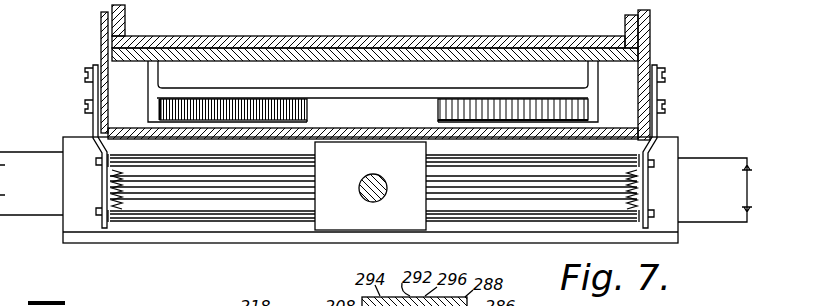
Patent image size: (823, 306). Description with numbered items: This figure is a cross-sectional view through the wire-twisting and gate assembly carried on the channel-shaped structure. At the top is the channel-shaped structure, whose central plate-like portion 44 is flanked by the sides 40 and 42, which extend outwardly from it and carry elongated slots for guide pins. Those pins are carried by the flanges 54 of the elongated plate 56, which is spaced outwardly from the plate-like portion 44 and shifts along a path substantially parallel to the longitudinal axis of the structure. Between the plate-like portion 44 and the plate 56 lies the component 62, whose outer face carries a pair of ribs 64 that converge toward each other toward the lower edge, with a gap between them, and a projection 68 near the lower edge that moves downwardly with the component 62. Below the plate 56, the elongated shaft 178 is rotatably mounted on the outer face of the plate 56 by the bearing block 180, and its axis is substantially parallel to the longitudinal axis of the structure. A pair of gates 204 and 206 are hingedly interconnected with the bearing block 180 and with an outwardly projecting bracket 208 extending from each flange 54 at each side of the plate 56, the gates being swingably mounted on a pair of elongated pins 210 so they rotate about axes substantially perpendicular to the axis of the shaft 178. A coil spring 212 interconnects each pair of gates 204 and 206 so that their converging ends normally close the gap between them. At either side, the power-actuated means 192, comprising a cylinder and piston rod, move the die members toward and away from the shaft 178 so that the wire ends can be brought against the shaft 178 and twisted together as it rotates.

The side 40 is at (128, 15).
The side 42 is at (625, 20).
The central plate-like portion 44 is at (288, 37).
The flanges 54 is at (100, 32).
The elongated plate 56 is at (478, 139).
The component 62 is at (191, 63).
The ribs 64 is at (262, 100).
The projection 68 is at (365, 115).
The elongated shaft 178 is at (373, 173).
The bearing block 180 is at (370, 218).
The power-actuated means 192 is at (24, 200).
The gate 204 is at (233, 200).
The gate 206 is at (228, 176).
The bracket 208 is at (95, 127).
The elongated pins 210 is at (315, 166).
The coil spring 212 is at (123, 188).